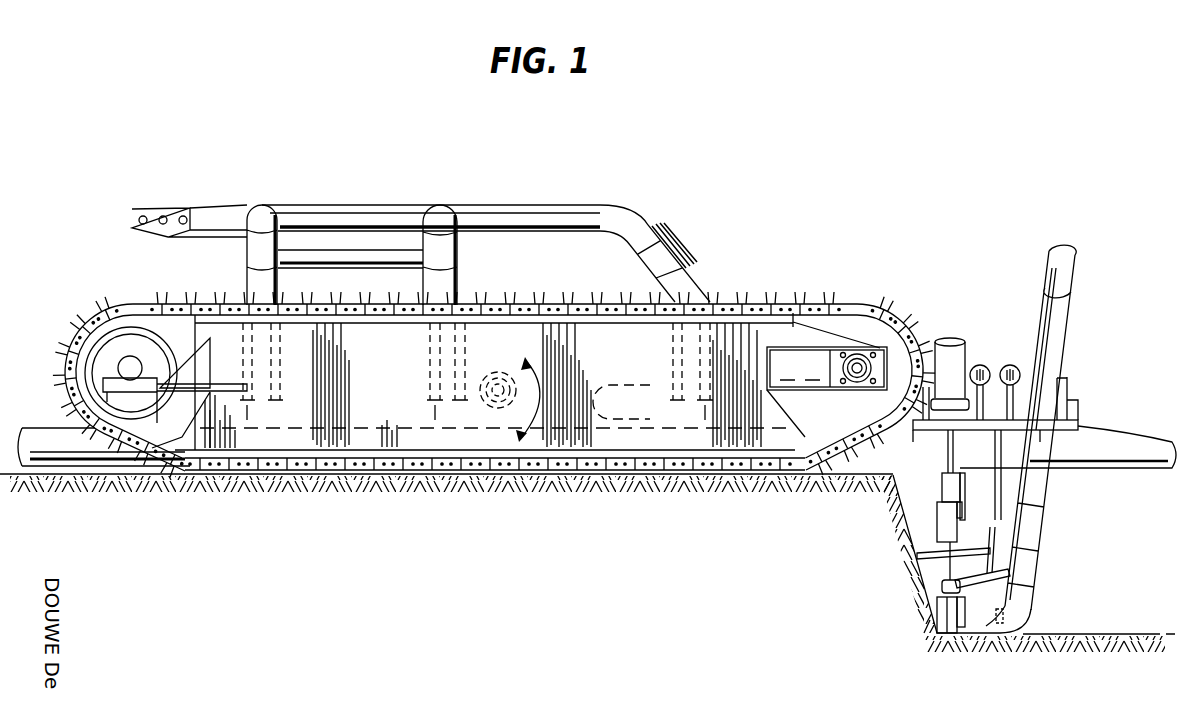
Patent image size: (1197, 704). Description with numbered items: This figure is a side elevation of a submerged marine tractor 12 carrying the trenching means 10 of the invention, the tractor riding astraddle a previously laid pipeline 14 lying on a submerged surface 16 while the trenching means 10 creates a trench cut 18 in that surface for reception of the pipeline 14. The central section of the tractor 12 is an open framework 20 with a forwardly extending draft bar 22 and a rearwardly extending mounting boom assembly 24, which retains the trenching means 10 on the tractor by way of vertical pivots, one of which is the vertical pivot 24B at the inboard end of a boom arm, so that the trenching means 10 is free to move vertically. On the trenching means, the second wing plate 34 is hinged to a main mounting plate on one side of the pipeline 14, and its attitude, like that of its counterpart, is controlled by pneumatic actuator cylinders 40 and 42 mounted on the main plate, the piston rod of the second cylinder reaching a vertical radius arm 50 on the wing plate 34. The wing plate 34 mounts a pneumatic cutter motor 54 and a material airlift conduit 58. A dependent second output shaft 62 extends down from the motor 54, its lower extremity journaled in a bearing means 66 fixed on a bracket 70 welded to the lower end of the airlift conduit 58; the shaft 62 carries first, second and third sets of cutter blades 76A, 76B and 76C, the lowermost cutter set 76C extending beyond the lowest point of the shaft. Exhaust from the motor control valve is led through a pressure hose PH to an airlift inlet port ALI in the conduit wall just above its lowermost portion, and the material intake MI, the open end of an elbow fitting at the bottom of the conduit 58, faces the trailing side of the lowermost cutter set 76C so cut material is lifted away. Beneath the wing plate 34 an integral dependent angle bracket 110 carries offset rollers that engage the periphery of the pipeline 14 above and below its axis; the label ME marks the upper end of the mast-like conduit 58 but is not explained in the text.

The trenching means 10 is at (993, 369).
The marine tractor 12 is at (718, 288).
The pipeline 14 is at (1120, 437).
The submerged surface 16 is at (75, 483).
The trench cut 18 is at (1107, 613).
The open framework 20 is at (370, 215).
The draft bar 22 is at (175, 212).
The mounting boom assembly 24 is at (633, 397).
The vertical pivot 24B is at (490, 402).
The second wing plate 34 is at (1014, 413).
The pneumatic actuator cylinder 40 is at (1008, 366).
The pneumatic actuator cylinder 42 is at (980, 366).
The vertical radius arm 50 is at (975, 408).
The pneumatic motor 54 is at (943, 365).
The airlift conduit 58 is at (1053, 467).
The second output shaft 62 is at (945, 462).
The bearing means 66 is at (933, 587).
The bracket 70 is at (977, 574).
The first set of cutter blades 76A is at (928, 517).
The second set of cutter blades 76B is at (907, 551).
The third set of cutter blades 76C is at (948, 612).
The dependent angle bracket 110 is at (1006, 462).
The mast end ME is at (1065, 265).
The pressure hose PH is at (1038, 523).
The material intake MI is at (922, 641).
The airlift inlet port ALI is at (1002, 625).